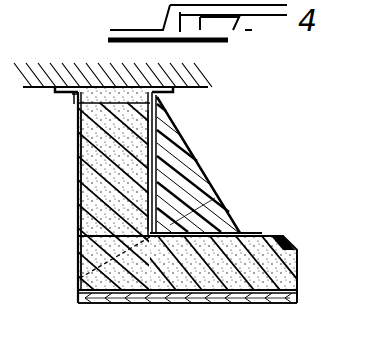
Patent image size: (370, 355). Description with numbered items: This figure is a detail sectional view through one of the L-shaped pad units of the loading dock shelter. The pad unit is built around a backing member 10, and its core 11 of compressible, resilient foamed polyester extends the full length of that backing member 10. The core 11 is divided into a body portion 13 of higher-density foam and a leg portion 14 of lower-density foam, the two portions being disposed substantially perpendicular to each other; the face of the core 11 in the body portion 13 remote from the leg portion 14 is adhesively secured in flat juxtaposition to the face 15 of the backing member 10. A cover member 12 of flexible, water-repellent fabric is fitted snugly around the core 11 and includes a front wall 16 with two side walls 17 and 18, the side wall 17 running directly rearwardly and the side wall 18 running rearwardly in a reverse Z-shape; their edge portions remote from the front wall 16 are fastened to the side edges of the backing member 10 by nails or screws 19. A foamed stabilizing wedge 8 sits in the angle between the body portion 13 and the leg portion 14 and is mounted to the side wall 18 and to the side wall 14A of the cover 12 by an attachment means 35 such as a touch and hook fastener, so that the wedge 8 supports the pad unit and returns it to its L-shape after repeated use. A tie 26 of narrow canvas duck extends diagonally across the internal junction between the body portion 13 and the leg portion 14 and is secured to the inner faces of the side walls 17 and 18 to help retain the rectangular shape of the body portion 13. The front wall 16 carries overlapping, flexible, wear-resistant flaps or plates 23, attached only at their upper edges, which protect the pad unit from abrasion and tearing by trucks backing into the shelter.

The backing member 10 is at (143, 88).
The core 11 is at (100, 222).
The body portion 13 is at (113, 193).
The face of backing member 15 is at (78, 148).
The side wall 17 is at (80, 175).
The nails or screws 19 is at (160, 97).
The ties 26 is at (78, 263).
The stabilizing wedge 8 is at (212, 180).
The attachment means 35 is at (183, 142).
The side wall 18 is at (215, 198).
The cover member 12 is at (327, 258).
The leg portion 14 is at (288, 238).
The side wall 14A is at (250, 235).
The front wall 16 is at (299, 294).
The flaps or plates 23 is at (222, 302).